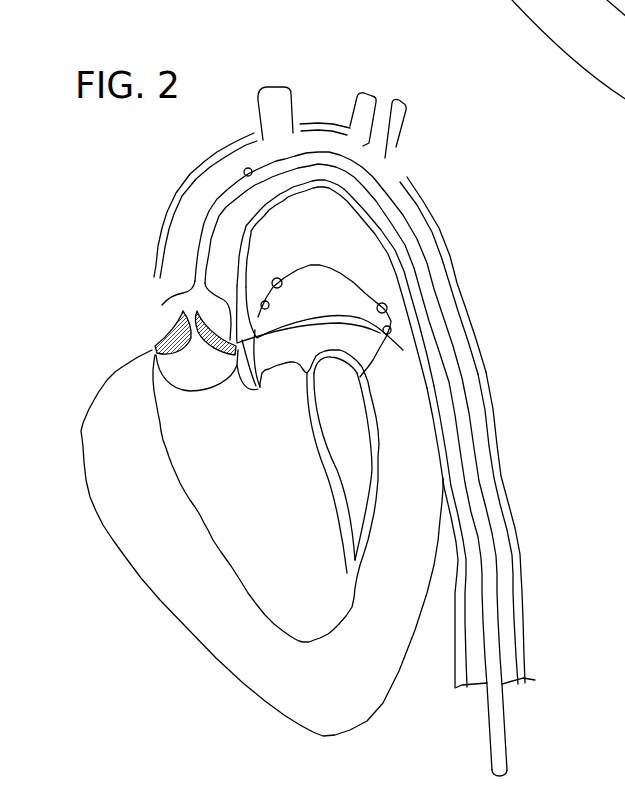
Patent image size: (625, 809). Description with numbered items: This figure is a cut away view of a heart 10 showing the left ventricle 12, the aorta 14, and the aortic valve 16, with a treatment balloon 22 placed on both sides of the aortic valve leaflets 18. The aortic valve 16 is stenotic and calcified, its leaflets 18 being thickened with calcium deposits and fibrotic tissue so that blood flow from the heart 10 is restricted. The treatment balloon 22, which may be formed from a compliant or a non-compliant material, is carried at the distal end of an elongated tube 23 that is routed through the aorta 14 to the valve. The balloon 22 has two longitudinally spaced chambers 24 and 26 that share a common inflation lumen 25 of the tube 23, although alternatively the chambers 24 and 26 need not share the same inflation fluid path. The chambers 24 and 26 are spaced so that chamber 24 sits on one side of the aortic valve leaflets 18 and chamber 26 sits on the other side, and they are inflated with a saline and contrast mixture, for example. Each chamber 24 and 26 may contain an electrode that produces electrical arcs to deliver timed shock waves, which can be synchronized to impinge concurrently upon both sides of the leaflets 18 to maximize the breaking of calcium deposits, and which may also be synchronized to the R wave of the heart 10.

The heart 10 is at (113, 185).
The left ventricle 12 is at (180, 437).
The aorta 14 is at (212, 180).
The aortic valve 16 is at (135, 314).
The valve leaflets 18 is at (150, 345).
The treatment balloon 22 is at (152, 266).
The elongated tube 23 is at (474, 381).
The chamber 24 is at (170, 303).
The common inflation lumen 25 is at (246, 168).
The chamber 26 is at (207, 383).